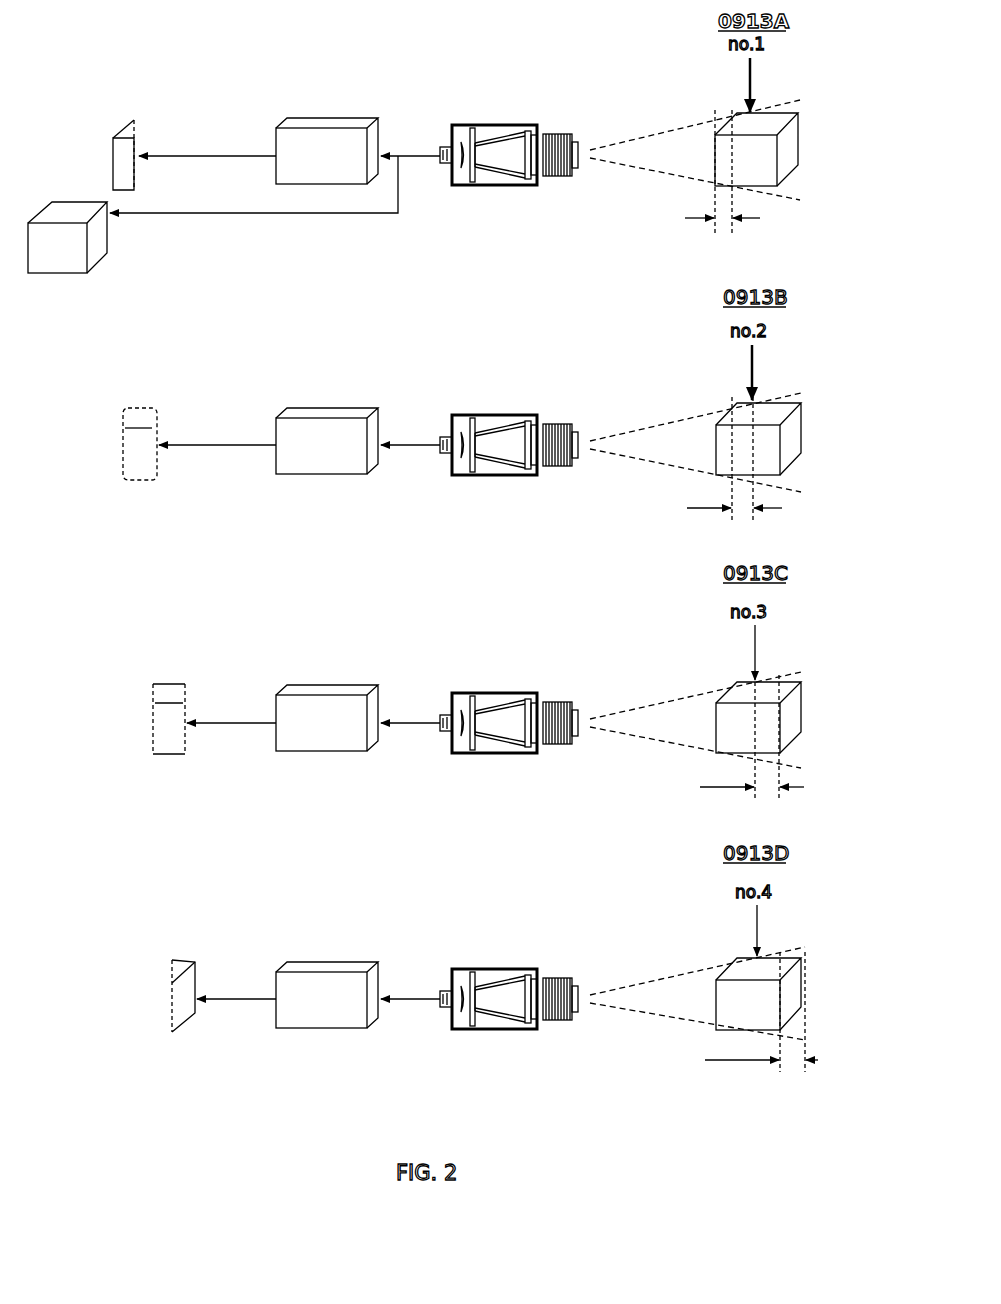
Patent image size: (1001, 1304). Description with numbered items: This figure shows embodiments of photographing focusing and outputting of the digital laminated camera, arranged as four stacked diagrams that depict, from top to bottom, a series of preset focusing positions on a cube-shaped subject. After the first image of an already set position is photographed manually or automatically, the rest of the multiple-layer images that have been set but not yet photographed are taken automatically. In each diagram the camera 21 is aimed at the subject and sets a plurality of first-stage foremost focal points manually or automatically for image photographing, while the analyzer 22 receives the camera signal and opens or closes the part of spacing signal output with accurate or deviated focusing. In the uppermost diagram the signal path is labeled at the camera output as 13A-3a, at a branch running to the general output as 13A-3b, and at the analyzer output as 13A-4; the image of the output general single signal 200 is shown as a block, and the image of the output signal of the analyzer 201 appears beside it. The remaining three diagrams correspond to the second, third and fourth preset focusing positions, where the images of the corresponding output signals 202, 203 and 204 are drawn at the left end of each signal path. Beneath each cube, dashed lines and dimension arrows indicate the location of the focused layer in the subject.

The camera 21 is at (522, 124).
The analyzer 22 is at (325, 120).
The image of the output general single signal 200 is at (110, 252).
The image of the output signal of the analyzer 201 is at (131, 118).
The image of the output signal 202 is at (137, 406).
The image of the output signal 203 is at (156, 682).
The image of the output signal 204 is at (171, 956).
The signal line 13A-4 is at (176, 149).
The signal line 13A-3a is at (413, 150).
The signal line 13A-3b is at (234, 210).